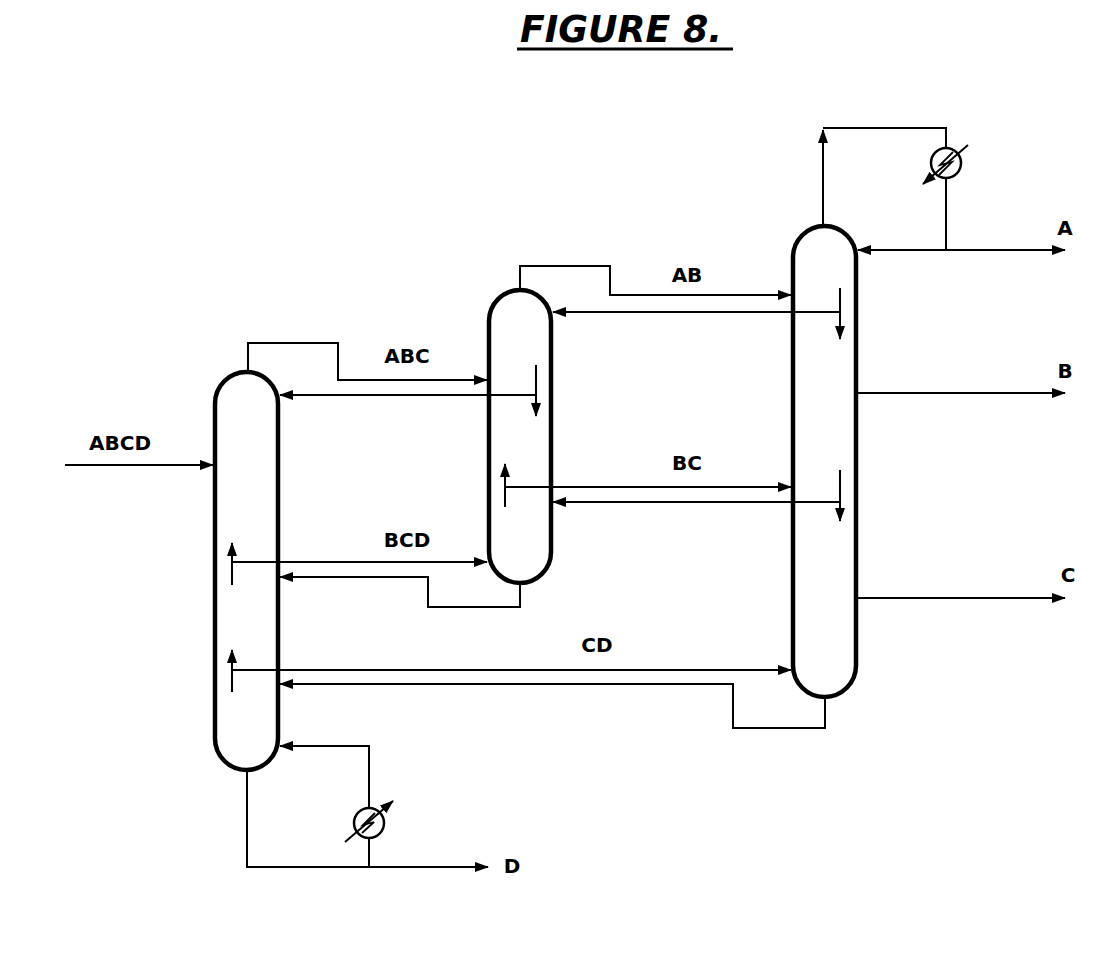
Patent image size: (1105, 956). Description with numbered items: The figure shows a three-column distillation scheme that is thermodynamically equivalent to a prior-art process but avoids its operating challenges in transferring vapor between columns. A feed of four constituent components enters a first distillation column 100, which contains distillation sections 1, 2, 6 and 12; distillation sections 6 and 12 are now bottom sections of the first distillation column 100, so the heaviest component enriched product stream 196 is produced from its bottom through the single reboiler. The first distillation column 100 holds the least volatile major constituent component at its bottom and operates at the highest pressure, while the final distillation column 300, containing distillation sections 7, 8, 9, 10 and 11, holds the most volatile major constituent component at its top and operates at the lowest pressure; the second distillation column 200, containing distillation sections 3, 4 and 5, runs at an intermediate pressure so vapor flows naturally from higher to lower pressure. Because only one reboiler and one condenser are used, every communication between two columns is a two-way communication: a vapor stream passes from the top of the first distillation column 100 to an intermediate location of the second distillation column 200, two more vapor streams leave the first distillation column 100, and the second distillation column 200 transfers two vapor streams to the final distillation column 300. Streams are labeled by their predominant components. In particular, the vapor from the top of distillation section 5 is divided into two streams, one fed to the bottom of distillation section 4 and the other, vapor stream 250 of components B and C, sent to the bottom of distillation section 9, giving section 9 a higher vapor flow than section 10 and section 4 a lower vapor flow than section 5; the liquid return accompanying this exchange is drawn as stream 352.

The distillation section 1 is at (238, 442).
The distillation section 2 is at (238, 518).
The distillation section 3 is at (511, 350).
The distillation section 4 is at (511, 447).
The distillation section 5 is at (511, 553).
The distillation section 6 is at (238, 630).
The distillation section 7 is at (816, 280).
The distillation section 8 is at (816, 372).
The distillation section 9 is at (816, 447).
The distillation section 10 is at (812, 567).
The distillation section 11 is at (812, 644).
The distillation section 12 is at (234, 737).
The first distillation column 100 is at (278, 518).
The second distillation column 200 is at (551, 440).
The final distillation column 300 is at (856, 522).
The heaviest component enriched product stream 196 is at (420, 871).
The vapor stream 250 is at (610, 484).
The return stream from third column to second column 352 is at (607, 508).